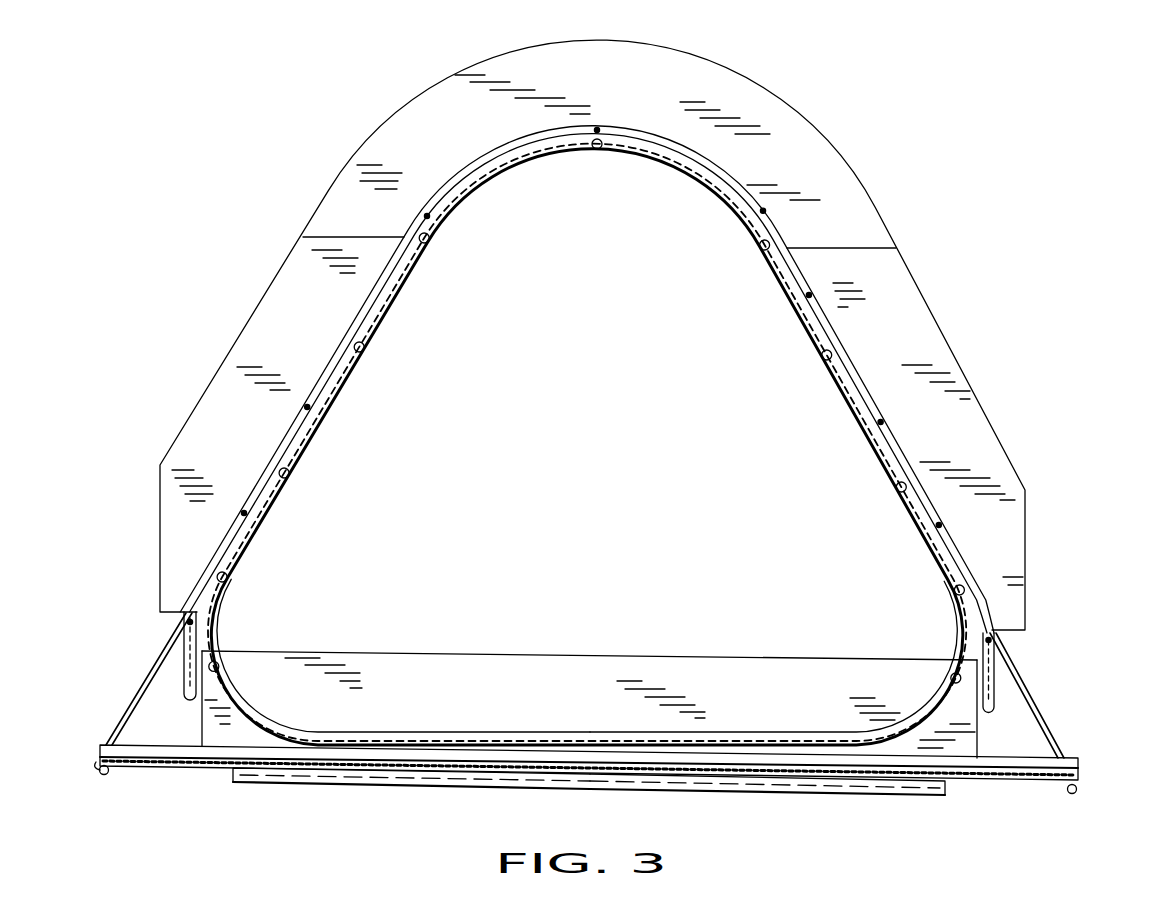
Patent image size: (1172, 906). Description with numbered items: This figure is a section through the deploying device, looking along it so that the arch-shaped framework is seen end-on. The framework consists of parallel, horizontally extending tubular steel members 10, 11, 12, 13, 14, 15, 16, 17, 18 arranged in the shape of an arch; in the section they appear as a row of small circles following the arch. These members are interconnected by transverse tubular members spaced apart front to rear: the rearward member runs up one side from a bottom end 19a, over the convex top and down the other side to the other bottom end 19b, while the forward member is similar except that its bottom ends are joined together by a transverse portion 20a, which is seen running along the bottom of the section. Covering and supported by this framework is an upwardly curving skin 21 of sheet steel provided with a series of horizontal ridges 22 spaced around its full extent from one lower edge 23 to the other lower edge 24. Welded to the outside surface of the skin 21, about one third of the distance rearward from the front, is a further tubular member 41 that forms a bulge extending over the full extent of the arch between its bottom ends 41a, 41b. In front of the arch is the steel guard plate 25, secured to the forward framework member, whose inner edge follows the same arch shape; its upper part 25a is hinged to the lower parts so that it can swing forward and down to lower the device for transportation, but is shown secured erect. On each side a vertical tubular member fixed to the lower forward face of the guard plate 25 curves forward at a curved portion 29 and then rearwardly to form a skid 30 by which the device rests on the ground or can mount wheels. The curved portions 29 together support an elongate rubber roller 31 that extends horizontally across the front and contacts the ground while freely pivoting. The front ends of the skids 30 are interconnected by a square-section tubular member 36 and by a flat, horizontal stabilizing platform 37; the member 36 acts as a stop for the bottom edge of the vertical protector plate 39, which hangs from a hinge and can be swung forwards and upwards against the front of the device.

The tubular member 10 is at (956, 594).
The tubular member 11 is at (898, 491).
The tubular member 12 is at (824, 360).
The tubular member 13 is at (761, 250).
The tubular member 14 is at (597, 150).
The tubular member 15 is at (430, 239).
The tubular member 16 is at (365, 347).
The tubular member 17 is at (289, 473).
The tubular member 18 is at (227, 577).
The bottom end 19a is at (950, 679).
The bottom end 19b is at (219, 662).
The transverse portion 20a is at (510, 738).
The skin 21 is at (714, 176).
The horizontal ridges 22 is at (598, 128).
The lower edge 23 is at (987, 673).
The lower edge 24 is at (213, 656).
The guard plate 25 is at (307, 274).
The upper part of guard plate 25a is at (740, 108).
The curved portion 29 is at (133, 718).
The skid 30 is at (100, 768).
The rubber roller 31 is at (300, 775).
The square-section tubular member 36 is at (1000, 770).
The stabilizing platform 37 is at (783, 786).
The protector plate 39 is at (480, 673).
The tubular member 41 is at (493, 147).
The bottom end 41a is at (995, 705).
The bottom end 41b is at (192, 699).